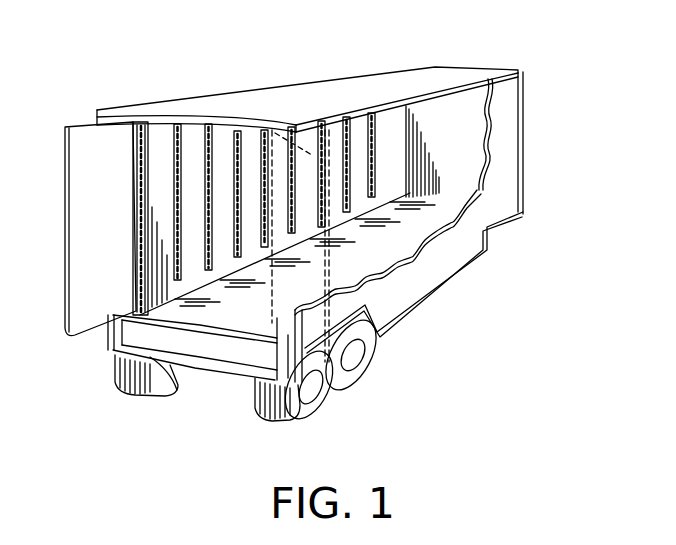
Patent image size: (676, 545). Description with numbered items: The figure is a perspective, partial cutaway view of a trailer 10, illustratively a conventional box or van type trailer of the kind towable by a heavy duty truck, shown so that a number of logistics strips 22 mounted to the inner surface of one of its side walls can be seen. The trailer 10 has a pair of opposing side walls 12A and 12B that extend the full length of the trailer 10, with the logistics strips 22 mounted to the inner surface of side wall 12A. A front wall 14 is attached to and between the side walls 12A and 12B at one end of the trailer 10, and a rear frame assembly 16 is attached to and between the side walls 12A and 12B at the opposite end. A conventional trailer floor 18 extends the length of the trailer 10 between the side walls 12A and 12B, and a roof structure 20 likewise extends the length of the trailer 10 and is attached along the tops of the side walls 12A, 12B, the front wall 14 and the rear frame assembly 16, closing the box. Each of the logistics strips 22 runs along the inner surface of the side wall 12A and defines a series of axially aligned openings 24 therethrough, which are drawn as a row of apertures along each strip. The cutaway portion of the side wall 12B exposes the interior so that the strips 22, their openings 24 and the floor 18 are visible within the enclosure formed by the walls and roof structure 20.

The trailer 10 is at (442, 325).
The side wall 12A is at (152, 147).
The side wall 12B is at (465, 245).
The front wall 14 is at (462, 148).
The rear frame assembly 16 is at (93, 263).
The trailer floor 18 is at (255, 313).
The roof structure 20 is at (336, 88).
The logistics strips 22 is at (178, 138).
The openings 24 is at (138, 198).